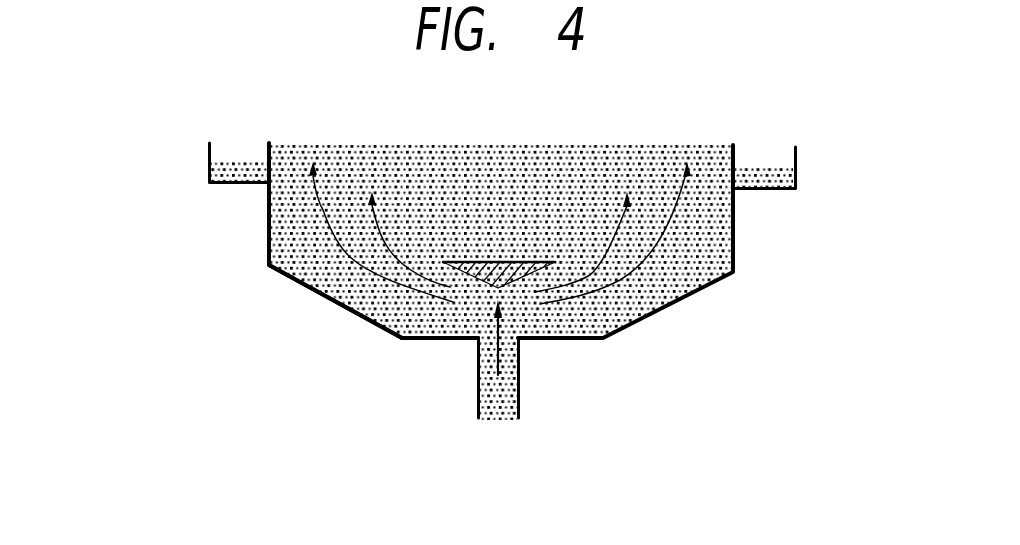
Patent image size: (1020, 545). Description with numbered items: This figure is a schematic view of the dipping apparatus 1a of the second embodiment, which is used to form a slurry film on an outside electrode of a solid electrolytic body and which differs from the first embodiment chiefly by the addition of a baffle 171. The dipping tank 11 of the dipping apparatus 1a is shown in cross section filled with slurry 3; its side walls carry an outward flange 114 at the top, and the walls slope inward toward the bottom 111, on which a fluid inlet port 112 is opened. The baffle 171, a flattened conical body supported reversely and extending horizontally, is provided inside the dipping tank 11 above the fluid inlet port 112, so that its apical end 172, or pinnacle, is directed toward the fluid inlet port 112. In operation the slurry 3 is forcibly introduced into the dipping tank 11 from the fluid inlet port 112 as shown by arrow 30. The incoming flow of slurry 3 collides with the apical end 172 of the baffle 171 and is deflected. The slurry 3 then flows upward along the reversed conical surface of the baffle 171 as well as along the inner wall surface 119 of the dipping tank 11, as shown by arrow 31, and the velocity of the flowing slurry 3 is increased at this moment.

The dipping apparatus 1a is at (360, 372).
The slurry 3 is at (589, 168).
The dipping tank 11 is at (287, 278).
The arrow 30 is at (497, 357).
The arrow 31 is at (325, 211).
The bottom 111 is at (355, 308).
The fluid inlet port 112 is at (523, 328).
The flange 114 is at (208, 153).
The inner wall surface 119 is at (276, 200).
The baffle 171 is at (492, 262).
The apical end 172 is at (525, 308).